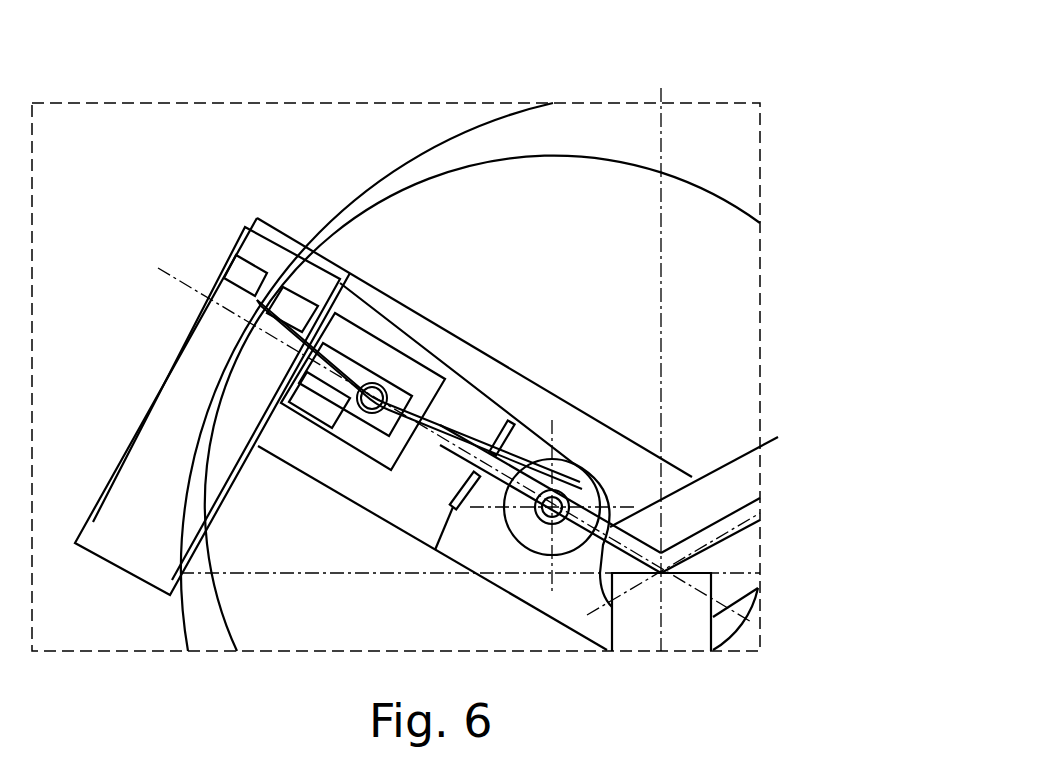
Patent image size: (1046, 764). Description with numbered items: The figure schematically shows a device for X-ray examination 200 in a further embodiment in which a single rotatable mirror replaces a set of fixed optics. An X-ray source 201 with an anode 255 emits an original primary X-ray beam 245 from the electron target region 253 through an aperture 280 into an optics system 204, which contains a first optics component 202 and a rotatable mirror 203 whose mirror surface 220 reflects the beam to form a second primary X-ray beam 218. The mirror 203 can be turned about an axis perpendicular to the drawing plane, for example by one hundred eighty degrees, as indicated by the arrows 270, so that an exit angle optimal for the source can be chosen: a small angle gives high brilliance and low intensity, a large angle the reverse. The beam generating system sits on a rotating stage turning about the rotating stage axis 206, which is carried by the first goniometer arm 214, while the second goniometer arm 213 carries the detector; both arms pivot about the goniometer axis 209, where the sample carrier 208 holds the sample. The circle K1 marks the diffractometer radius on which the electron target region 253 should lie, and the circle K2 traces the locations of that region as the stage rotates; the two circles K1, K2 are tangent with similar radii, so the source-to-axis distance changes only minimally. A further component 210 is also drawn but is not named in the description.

The device for X-ray examination 200 is at (784, 78).
The X-ray source 201 is at (243, 257).
The first optics component 202 is at (385, 343).
The rotatable mirror 203 is at (280, 398).
The optics system 204 is at (468, 410).
The rotating stage axis 206 is at (540, 528).
The sample carrier 208 is at (628, 622).
The goniometer axis 209 is at (662, 575).
The lever 210 is at (705, 545).
The second goniometer arm 213 is at (745, 463).
The first goniometer arm 214 is at (600, 445).
The second primary X-ray beam 218 is at (520, 485).
The mirror surface 220 is at (355, 372).
The original primary X-ray beam 245 is at (307, 322).
The electron target region 253 is at (262, 310).
The anode 255 is at (263, 279).
The arrows 270 is at (337, 395).
The aperture 280 is at (160, 385).
The circle K1 is at (510, 103).
The circle K2 is at (685, 178).